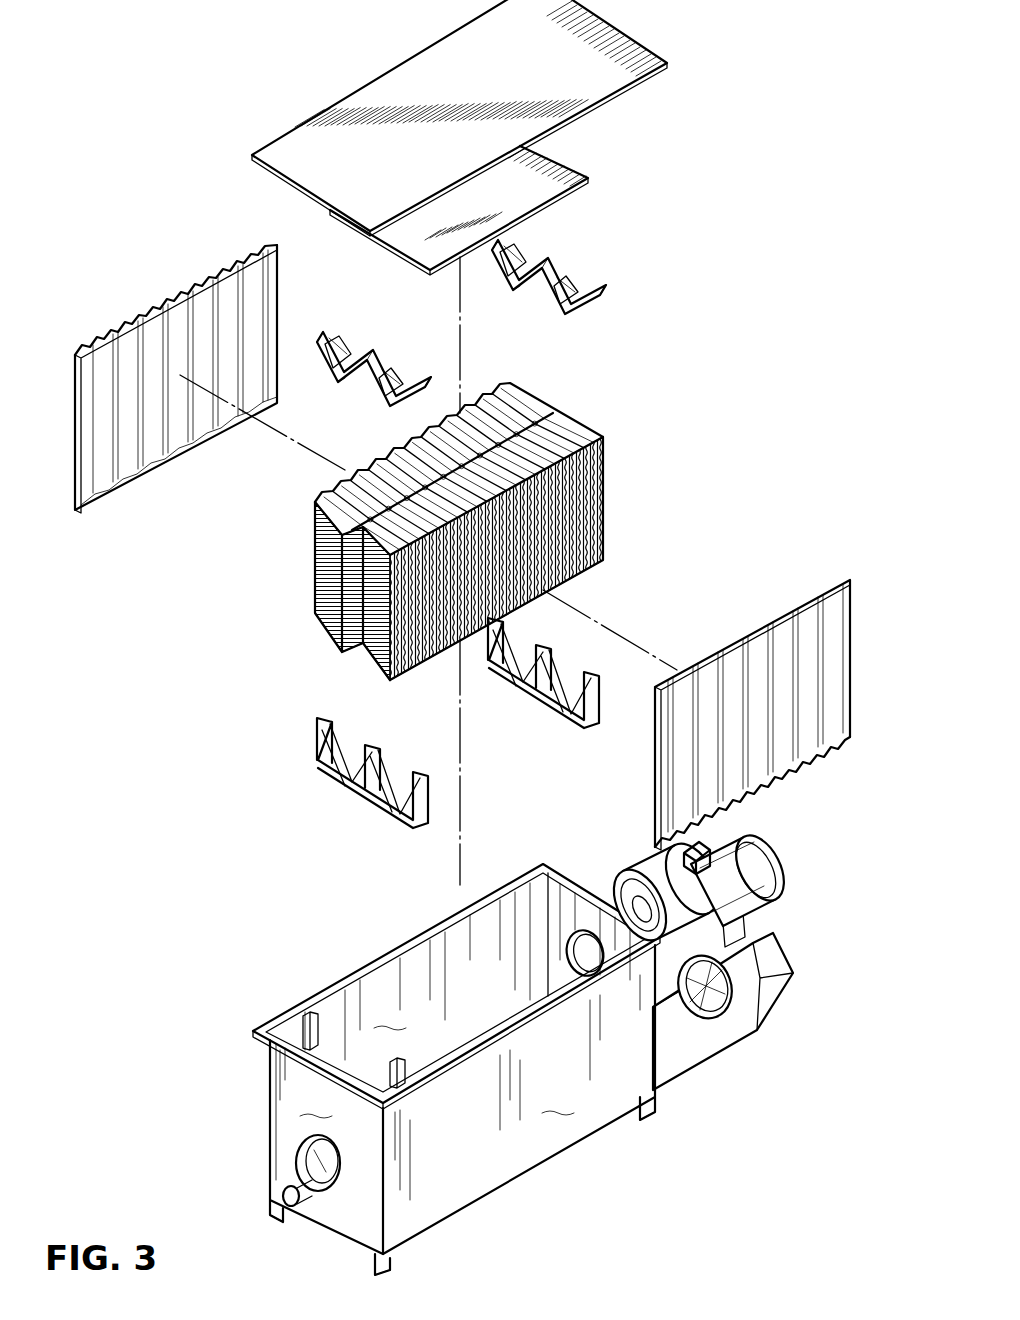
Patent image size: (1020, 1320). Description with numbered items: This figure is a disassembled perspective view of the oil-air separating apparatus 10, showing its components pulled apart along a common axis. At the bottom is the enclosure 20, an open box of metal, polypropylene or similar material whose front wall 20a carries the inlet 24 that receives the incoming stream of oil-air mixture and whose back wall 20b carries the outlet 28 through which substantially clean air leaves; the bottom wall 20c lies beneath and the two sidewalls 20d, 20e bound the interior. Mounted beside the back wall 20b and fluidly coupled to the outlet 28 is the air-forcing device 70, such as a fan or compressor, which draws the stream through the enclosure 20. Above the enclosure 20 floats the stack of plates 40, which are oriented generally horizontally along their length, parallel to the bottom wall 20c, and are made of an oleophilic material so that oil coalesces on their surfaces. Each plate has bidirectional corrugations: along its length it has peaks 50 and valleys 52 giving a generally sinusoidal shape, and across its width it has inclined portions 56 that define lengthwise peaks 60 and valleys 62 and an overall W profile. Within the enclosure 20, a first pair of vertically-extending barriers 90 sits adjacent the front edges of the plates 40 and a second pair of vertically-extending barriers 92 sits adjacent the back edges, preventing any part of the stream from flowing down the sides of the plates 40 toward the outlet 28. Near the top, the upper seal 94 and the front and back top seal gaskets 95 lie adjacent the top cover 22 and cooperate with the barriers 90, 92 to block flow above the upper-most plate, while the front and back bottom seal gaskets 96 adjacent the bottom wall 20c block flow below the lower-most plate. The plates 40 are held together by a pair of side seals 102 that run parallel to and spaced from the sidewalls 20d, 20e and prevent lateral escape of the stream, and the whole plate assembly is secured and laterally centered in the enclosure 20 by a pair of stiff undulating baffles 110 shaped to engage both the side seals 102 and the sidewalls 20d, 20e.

The apparatus 10 is at (136, 40).
The enclosure 20 is at (437, 1039).
The front wall 20a is at (326, 1147).
The back wall 20b is at (578, 891).
The bottom wall 20c is at (318, 1165).
The sidewall 20d is at (426, 966).
The sidewall 20e is at (519, 1099).
The top cover 22 is at (282, 140).
The inlet 24 is at (293, 1195).
The outlet 28 is at (587, 950).
The stacked plates 40 is at (451, 510).
The peaks 50 is at (451, 510).
The valleys 52 is at (417, 524).
The inclined portions 56 is at (335, 518).
The peaks 60 is at (451, 510).
The valleys 62 is at (532, 410).
The air-forcing device 70 is at (697, 959).
The vertically-extending barriers 90 is at (300, 1028).
The vertically-extending barriers 92 is at (506, 914).
The upper seal 94 is at (569, 169).
The top seal gaskets 95 is at (552, 262).
The bottom seal gaskets 96 is at (360, 800).
The side seals 102 is at (467, 547).
The undulating baffles 110 is at (122, 336).